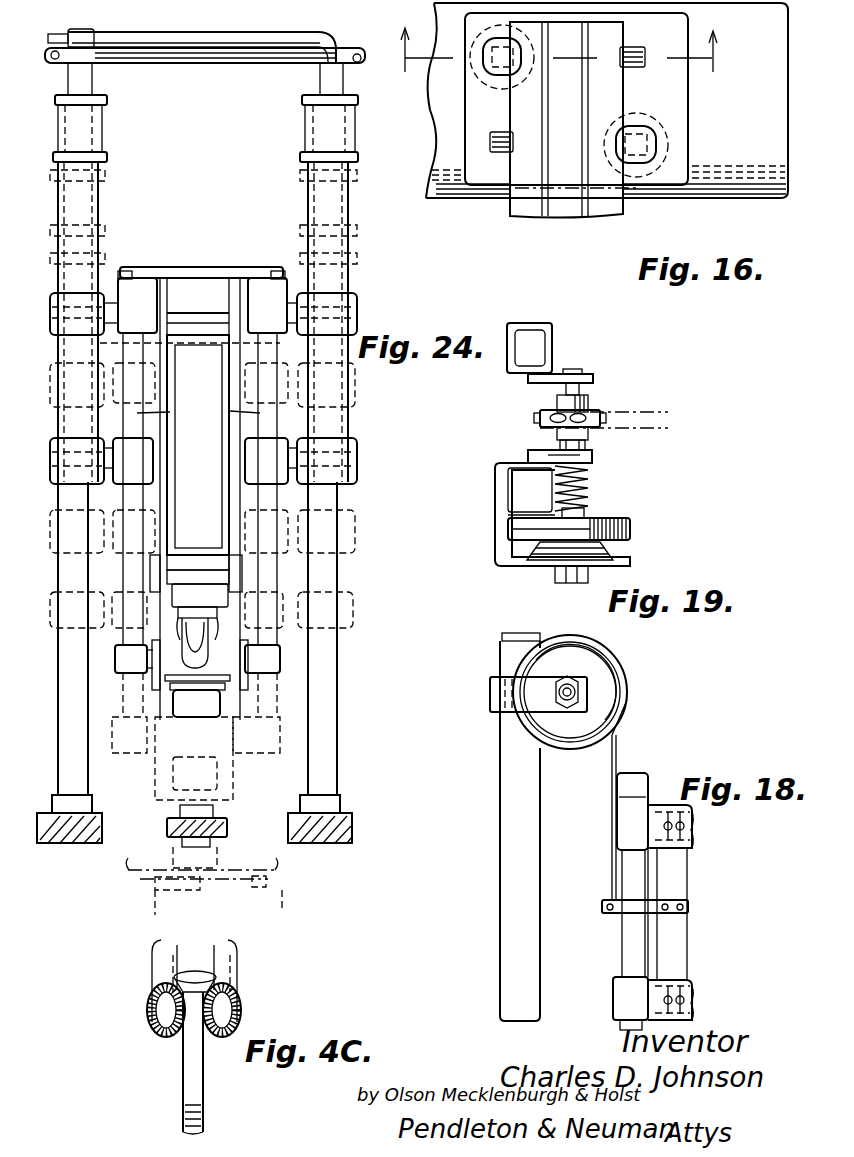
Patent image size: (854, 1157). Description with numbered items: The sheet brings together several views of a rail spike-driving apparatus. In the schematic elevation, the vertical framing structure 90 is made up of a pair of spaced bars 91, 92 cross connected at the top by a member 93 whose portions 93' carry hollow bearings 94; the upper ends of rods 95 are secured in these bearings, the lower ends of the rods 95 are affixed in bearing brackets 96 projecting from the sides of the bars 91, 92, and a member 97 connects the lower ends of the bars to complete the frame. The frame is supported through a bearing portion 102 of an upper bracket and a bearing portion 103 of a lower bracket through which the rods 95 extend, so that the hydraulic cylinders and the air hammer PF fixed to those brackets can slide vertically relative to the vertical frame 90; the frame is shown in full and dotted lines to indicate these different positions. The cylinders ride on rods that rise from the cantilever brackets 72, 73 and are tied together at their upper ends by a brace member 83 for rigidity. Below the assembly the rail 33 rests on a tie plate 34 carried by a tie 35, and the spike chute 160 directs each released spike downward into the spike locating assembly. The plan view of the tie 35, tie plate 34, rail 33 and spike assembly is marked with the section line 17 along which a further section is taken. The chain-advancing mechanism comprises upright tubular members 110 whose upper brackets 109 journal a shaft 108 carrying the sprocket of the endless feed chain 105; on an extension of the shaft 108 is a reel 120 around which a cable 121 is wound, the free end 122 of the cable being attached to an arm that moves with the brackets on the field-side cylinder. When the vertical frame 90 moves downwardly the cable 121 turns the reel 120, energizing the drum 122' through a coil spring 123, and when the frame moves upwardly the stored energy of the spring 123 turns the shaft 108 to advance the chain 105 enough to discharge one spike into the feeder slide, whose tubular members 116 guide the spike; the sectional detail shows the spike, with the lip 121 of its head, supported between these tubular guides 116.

In FIG. 24, the brace member 83 is at (210, 57).
In FIG. 24, the cantilever bracket 72 is at (37, 826).
In FIG. 24, the cantilever bracket 73 is at (352, 826).
In FIG. 24, the vertical framing structure 90 is at (219, 257).
In FIG. 18, the vertical framing structure 90 is at (655, 778).
In FIG. 24, the cross member 93 is at (201, 248).
In FIG. 24, the portions of cross member 93' is at (202, 255).
In FIG. 24, the hollow bearings 94 is at (255, 283).
In FIG. 24, the bearing portion 102 is at (203, 306).
In FIG. 18, the bearing portion 102 is at (617, 823).
In FIG. 24, the rods 95 is at (230, 411).
In FIG. 18, the rods 95 is at (622, 925).
In FIG. 24, the bar 91 is at (168, 465).
In FIG. 24, the bar 92 is at (226, 480).
In FIG. 24, the bearing portion 103 is at (147, 476).
In FIG. 18, the bearing portion 103 is at (615, 990).
In FIG. 24, the spike chute 160 is at (197, 640).
In FIG. 24, the bearing brackets 96 is at (117, 660).
In FIG. 24, the lower frame member 97 is at (170, 686).
In FIG. 24, the cable 121 is at (256, 886).
In FIG. 4C, the cable 121 is at (205, 977).
In FIG. 19, the cable 121 is at (548, 554).
In FIG. 24, the rail 33 is at (124, 872).
In FIG. 16, the rail 33 is at (561, 208).
In FIG. 24, the tie plate 34 is at (150, 882).
In FIG. 16, the tie plate 34 is at (658, 97).
In FIG. 24, the tie 35 is at (278, 893).
In FIG. 16, the tie 35 is at (770, 86).
In FIG. 4C, the tubular members 116 is at (210, 952).
In FIG. 16, the section line 17- 17 is at (556, 101).
In FIG. 19, the upright tubular members 110 is at (508, 368).
In FIG. 18, the upright tubular members 110 is at (500, 902).
In FIG. 19, the brackets 109 is at (560, 373).
In FIG. 19, the shaft 108 is at (582, 383).
In FIG. 19, the endless chain 105 is at (643, 410).
In FIG. 19, the coil spring 123 is at (588, 484).
In FIG. 19, the drum 122' is at (601, 517).
In FIG. 19, the reel 120 is at (628, 561).
In FIG. 18, the reel 120 is at (619, 668).
In FIG. 18, the free end of cable 122 is at (592, 800).